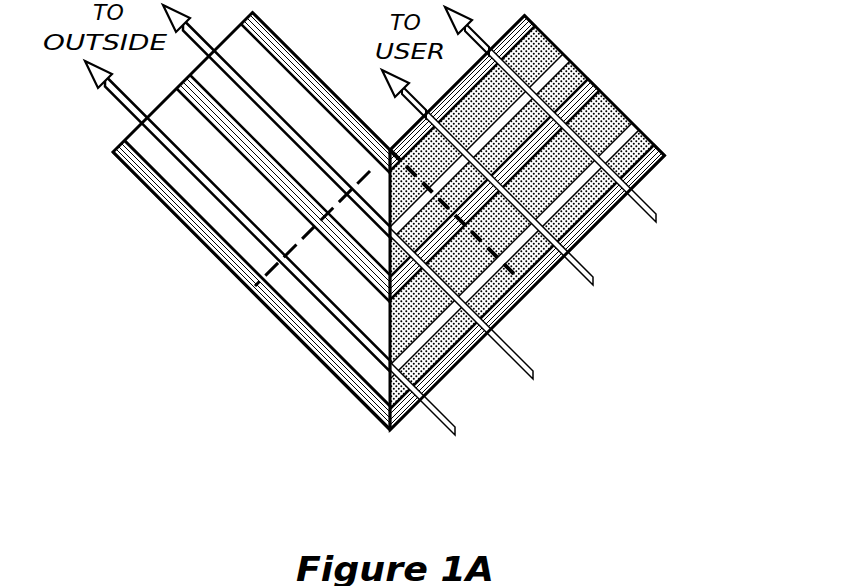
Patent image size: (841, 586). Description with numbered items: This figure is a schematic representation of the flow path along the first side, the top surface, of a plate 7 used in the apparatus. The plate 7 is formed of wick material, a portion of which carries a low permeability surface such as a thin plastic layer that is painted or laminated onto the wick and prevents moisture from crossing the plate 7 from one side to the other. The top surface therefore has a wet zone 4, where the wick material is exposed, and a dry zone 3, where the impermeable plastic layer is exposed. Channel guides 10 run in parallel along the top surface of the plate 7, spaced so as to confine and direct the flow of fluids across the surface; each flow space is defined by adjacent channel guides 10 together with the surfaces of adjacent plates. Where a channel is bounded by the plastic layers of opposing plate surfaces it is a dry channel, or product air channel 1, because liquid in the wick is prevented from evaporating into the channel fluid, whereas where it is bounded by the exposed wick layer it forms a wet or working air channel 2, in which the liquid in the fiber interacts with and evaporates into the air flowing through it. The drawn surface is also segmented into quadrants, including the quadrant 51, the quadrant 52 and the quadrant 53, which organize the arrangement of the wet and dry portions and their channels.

The product air channel 1 is at (656, 214).
The working air channel 2 is at (535, 372).
The dry zone 3 is at (406, 418).
The wet zone 4 is at (376, 381).
The plate 7 is at (607, 56).
The channel guide 10 is at (328, 258).
The quadrant 51 is at (176, 216).
The quadrant 52 is at (318, 369).
The quadrant 53 is at (636, 122).